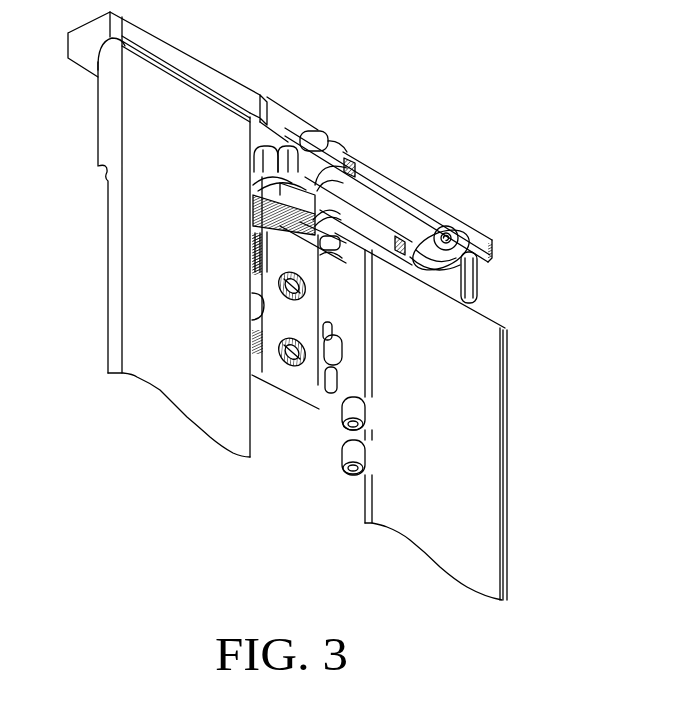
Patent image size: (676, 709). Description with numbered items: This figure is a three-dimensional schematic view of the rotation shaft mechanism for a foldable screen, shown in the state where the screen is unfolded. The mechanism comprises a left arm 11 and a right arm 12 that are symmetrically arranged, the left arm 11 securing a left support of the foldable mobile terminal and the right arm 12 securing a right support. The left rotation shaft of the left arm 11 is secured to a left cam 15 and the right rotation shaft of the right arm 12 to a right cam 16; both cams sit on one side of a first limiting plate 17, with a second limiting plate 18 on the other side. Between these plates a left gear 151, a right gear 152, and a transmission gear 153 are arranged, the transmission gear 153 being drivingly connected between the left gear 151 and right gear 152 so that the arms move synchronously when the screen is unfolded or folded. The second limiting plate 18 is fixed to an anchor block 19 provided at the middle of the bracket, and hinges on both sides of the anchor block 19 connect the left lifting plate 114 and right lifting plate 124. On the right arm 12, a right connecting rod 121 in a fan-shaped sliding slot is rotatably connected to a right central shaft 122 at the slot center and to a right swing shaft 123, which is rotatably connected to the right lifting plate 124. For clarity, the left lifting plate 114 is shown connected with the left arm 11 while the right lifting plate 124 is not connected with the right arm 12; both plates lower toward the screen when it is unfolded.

The left arm 11 is at (188, 50).
The left lifting plate 114 is at (113, 237).
The right arm 12 is at (420, 187).
The right connecting rod 121 is at (453, 267).
The right central shaft 122 is at (451, 237).
The right swing shaft 123 is at (460, 290).
The right lifting plate 124 is at (365, 497).
The left cam 15 is at (253, 173).
The left gear 151 is at (253, 220).
The right gear 152 is at (338, 241).
The transmission gear 153 is at (322, 183).
The right cam 16 is at (312, 175).
The first limiting plate 17 is at (323, 213).
The second limiting plate 18 is at (338, 260).
The anchor block 19 is at (282, 380).